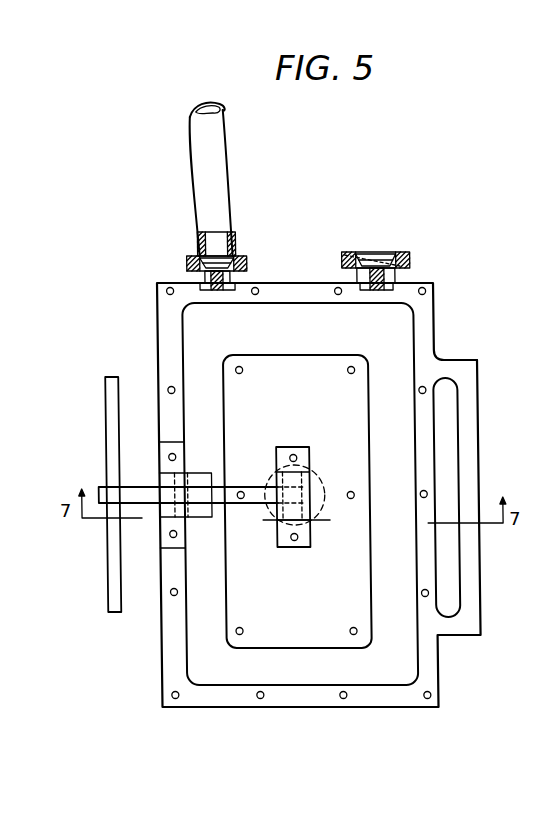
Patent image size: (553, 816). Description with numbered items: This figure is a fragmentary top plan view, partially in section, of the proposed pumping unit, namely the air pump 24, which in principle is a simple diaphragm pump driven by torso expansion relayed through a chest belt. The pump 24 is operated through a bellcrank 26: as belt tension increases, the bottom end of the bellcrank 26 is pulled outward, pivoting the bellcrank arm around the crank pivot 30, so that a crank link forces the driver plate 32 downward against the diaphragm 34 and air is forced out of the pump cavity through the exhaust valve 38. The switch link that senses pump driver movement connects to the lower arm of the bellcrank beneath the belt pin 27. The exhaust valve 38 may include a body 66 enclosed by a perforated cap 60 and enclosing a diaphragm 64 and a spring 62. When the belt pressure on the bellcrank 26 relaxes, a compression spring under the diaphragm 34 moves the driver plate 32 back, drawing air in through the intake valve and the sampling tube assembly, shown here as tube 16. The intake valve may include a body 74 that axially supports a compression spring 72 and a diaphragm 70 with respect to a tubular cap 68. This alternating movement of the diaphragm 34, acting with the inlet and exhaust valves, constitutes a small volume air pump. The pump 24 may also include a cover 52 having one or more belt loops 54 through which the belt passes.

The hose 16 is at (226, 138).
The air pump 24 is at (156, 325).
The bellcrank 26 is at (240, 487).
The belt pin 27 is at (108, 458).
The crank pivot 30 is at (186, 508).
The driver plate 32 is at (302, 602).
The diaphragm 34 is at (400, 516).
The exhaust valve 38 is at (410, 253).
The cover 52 is at (462, 364).
The belt loops 54 is at (452, 421).
The perforated cap 60 is at (353, 256).
The spring 62 is at (370, 262).
The diaphragm 64 is at (350, 259).
The body 66 is at (360, 271).
The tubular cap 68 is at (234, 244).
The diaphragm 70 is at (206, 260).
The compression spring 72 is at (188, 260).
The body 74 is at (228, 283).